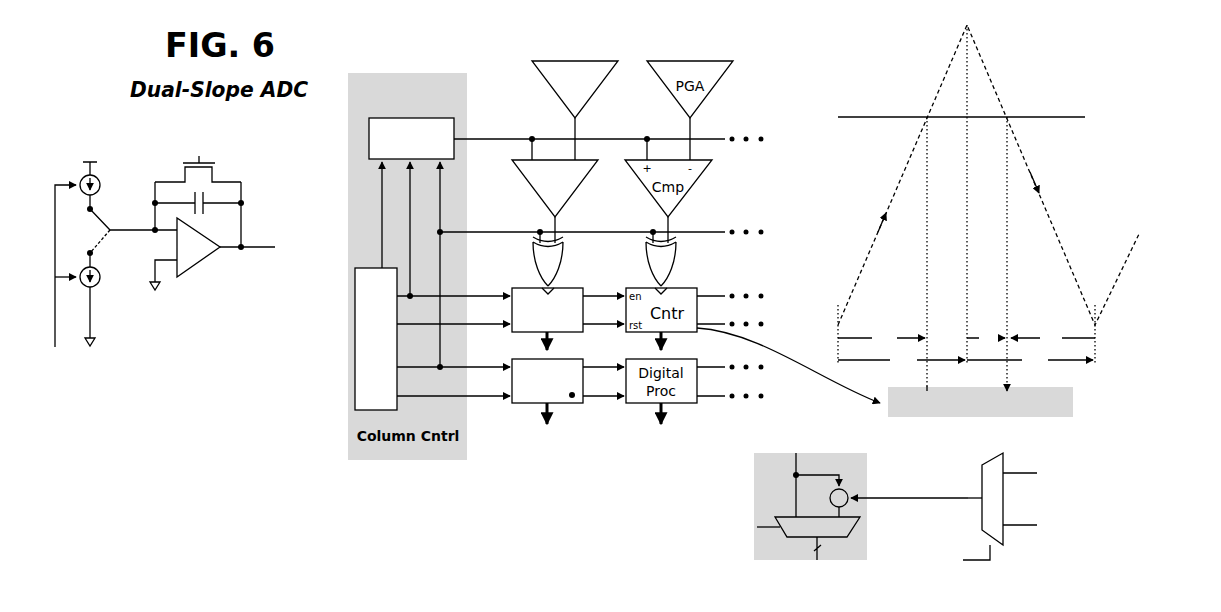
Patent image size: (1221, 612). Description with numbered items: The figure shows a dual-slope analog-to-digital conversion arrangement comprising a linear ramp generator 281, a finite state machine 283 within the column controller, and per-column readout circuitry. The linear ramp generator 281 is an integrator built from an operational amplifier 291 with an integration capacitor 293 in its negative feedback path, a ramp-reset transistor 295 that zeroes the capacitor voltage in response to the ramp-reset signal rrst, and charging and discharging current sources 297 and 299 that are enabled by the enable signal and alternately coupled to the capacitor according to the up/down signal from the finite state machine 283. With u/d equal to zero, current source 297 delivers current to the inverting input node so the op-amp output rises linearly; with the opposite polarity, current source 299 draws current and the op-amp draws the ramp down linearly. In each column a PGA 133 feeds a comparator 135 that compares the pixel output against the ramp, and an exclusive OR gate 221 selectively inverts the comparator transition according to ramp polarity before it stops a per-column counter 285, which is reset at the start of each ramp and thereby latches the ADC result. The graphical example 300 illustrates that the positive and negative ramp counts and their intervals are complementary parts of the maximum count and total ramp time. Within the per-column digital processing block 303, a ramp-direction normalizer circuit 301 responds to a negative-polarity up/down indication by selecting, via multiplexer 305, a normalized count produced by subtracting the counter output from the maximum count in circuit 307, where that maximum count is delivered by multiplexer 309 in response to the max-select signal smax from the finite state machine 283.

The PGA 133 is at (565, 97).
The comparator 135 is at (565, 195).
The exclusive OR gate 221 is at (539, 262).
The linear ramp generator 281 is at (249, 242).
The finite state machine 283 is at (358, 327).
The per-column counter 285 is at (573, 288).
The operational amplifier 291 is at (200, 255).
The integration capacitor 293 is at (206, 204).
The ramp-reset transistor 295 is at (215, 165).
The charging current source 297 is at (103, 180).
The discharging current source 299 is at (101, 285).
The graphical example 300 is at (866, 201).
The ramp-direction normalizer circuit 301 is at (572, 395).
The per-column digital processing block 303 is at (583, 403).
The multiplexer 305 is at (862, 528).
The subtraction circuit 307 is at (870, 483).
The multiplexer 309 is at (990, 462).